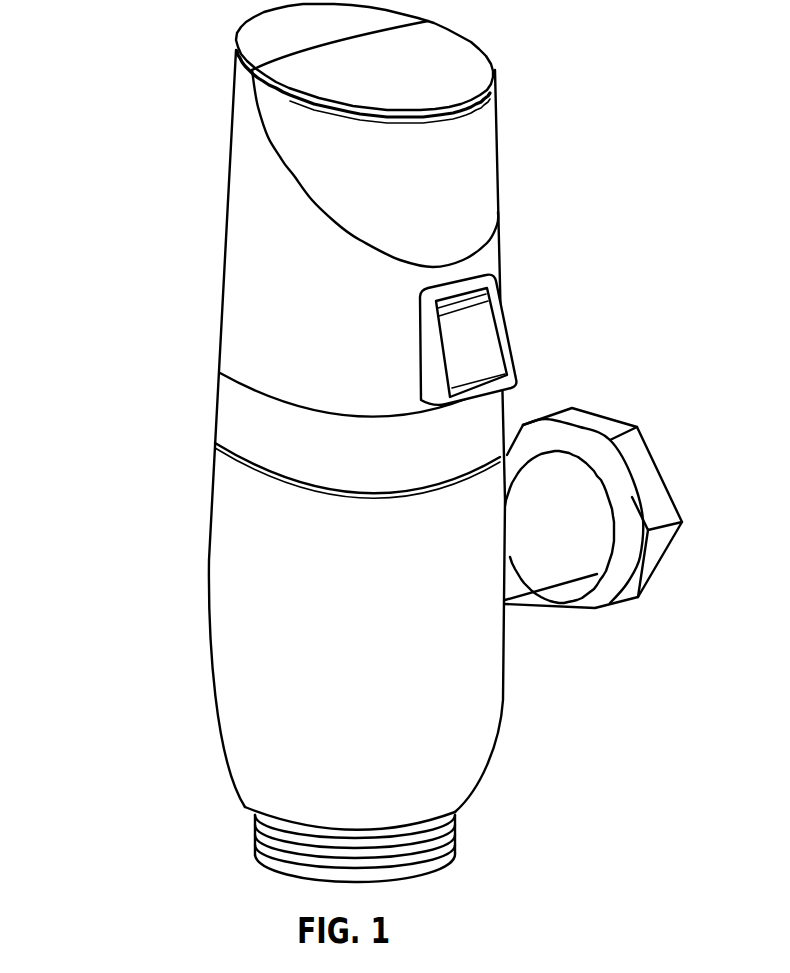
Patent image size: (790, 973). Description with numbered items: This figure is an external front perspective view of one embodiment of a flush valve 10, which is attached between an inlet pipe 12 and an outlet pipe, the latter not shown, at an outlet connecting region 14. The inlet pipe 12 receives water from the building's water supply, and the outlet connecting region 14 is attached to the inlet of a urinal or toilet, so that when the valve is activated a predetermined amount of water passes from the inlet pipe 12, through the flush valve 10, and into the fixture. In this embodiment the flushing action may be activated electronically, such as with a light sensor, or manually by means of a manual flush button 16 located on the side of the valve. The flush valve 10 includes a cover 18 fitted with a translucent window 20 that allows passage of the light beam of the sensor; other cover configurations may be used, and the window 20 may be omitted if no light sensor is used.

The flush valve 10 is at (160, 601).
The inlet pipe 12 is at (548, 558).
The outlet connecting region 14 is at (456, 838).
The manual flush button 16 is at (472, 342).
The cover 18 is at (247, 192).
The translucent window 20 is at (268, 105).